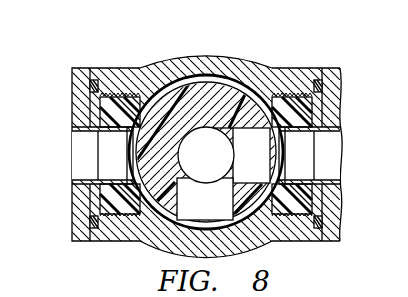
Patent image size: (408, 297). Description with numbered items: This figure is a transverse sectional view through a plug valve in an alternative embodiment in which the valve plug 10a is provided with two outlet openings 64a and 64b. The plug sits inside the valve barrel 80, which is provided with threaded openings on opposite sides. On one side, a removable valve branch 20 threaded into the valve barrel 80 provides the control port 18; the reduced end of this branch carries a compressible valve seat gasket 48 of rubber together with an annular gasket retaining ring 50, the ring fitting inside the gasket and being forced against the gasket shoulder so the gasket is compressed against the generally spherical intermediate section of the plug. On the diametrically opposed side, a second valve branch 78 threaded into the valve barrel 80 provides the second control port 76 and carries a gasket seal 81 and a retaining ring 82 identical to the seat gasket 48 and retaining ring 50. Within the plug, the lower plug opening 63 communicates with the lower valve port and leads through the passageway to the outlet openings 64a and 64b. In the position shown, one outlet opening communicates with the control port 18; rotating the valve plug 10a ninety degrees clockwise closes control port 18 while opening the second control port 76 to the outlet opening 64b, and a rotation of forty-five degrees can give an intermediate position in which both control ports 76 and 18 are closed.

The valve plug 10a is at (192, 57).
The valve branch 78 is at (74, 68).
The valve barrel 80 is at (260, 73).
The valve branch 20 is at (331, 70).
The valve seat gasket 48 is at (309, 110).
The gasket seal 81 is at (92, 88).
The second control port 76 is at (95, 168).
The retaining ring 82 is at (100, 189).
The lower plug opening 63 is at (219, 167).
The outlet opening 64a is at (264, 170).
The outlet opening 64b is at (222, 212).
The control port 18 is at (338, 170).
The gasket retaining ring 50 is at (341, 187).